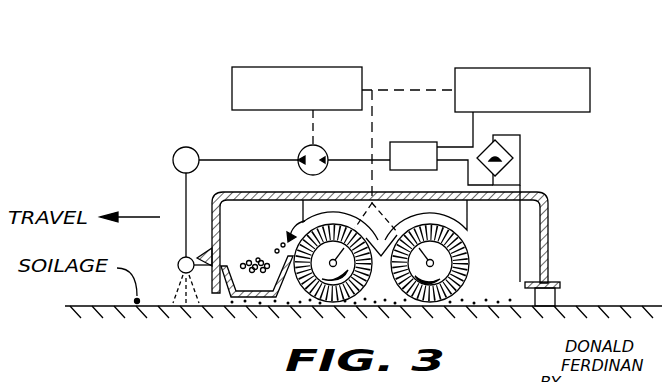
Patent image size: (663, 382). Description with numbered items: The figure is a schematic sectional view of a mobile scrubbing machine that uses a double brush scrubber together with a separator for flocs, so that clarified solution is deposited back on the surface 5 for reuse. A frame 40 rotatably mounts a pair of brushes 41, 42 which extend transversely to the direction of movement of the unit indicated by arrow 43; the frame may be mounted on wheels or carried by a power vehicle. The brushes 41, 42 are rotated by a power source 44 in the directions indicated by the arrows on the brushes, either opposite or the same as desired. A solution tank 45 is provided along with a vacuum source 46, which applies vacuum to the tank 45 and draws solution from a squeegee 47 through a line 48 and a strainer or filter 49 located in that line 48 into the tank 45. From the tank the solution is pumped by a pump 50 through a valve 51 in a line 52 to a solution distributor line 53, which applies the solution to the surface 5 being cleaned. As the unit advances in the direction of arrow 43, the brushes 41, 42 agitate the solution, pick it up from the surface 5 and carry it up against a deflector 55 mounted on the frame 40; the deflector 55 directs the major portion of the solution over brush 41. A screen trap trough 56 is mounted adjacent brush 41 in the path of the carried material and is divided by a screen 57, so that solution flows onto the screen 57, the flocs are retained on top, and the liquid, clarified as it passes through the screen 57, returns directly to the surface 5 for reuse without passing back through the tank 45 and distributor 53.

The ground surface 5 is at (618, 306).
The frame 40 is at (547, 232).
The brush 41 is at (300, 300).
The brush 42 is at (402, 300).
The arrow 43 is at (140, 217).
The power source 44 is at (300, 67).
The solution tank 45 is at (412, 148).
The vacuum source 46 is at (590, 92).
The squeegee 47 is at (557, 303).
The line 48 is at (520, 250).
The strainer or filter 49 is at (508, 151).
The pump 50 is at (300, 153).
The valve 51 is at (173, 157).
The line 52 is at (220, 158).
The solution distributor line 53 is at (179, 261).
The deflector 55 is at (462, 226).
The screen trap trough 56 is at (248, 300).
The screen 57 is at (238, 264).